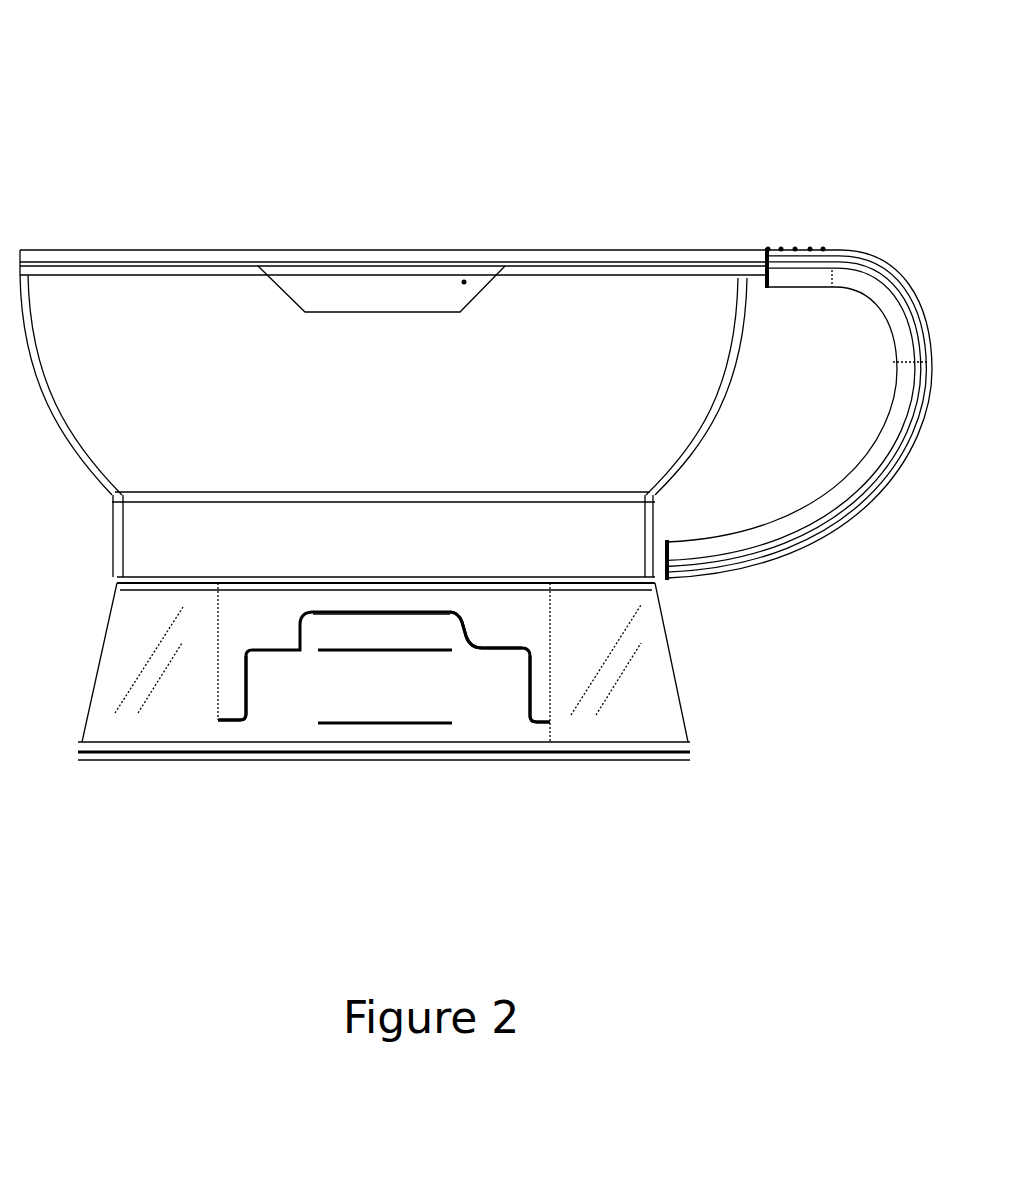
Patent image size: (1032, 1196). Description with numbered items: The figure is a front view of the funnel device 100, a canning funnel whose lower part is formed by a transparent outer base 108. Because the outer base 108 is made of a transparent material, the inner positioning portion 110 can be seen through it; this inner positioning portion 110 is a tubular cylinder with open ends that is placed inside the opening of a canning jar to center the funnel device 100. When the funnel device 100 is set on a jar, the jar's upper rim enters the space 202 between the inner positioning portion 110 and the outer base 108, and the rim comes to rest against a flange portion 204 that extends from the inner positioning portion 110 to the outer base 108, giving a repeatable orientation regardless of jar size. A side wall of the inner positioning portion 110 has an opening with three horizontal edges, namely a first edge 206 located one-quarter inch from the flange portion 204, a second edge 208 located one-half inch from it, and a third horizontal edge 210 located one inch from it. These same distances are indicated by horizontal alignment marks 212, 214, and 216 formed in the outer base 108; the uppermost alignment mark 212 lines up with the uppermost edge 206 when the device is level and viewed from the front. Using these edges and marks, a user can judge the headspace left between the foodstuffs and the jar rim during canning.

The funnel device 100 is at (602, 140).
The outer base 108 is at (665, 648).
The inner positioning portion 110 is at (532, 622).
The space 202 is at (628, 682).
The flange portion 204 is at (575, 578).
The first edge 206 is at (332, 618).
The second edge 208 is at (272, 651).
The third horizontal edge 210 is at (218, 722).
The horizontal alignment mark 212 is at (350, 618).
The horizontal alignment mark 214 is at (373, 652).
The horizontal alignment mark 216 is at (395, 723).